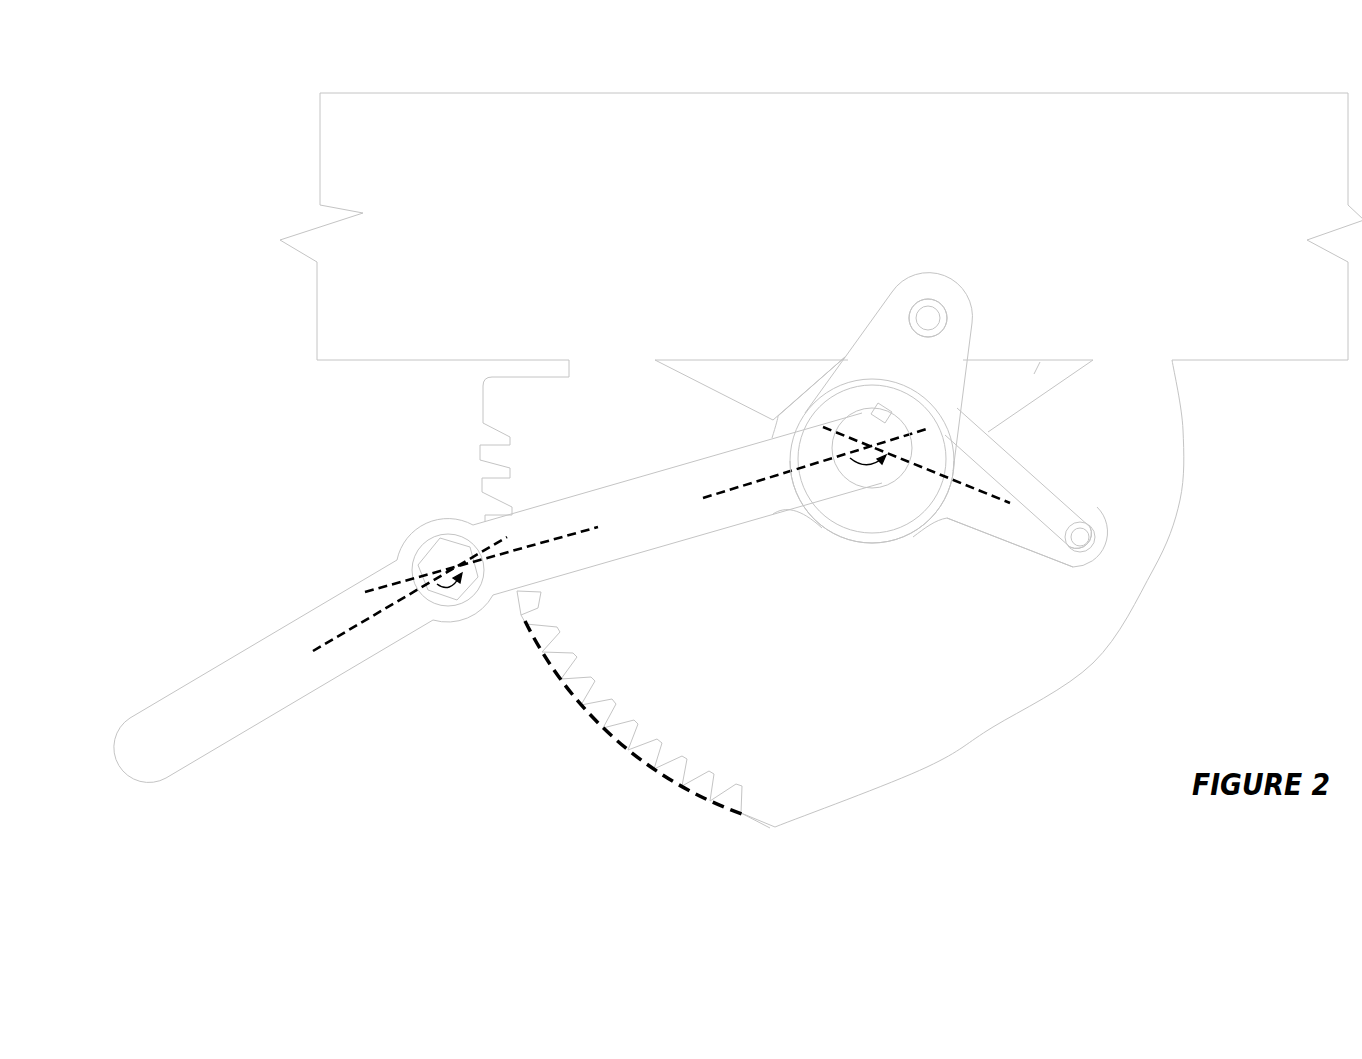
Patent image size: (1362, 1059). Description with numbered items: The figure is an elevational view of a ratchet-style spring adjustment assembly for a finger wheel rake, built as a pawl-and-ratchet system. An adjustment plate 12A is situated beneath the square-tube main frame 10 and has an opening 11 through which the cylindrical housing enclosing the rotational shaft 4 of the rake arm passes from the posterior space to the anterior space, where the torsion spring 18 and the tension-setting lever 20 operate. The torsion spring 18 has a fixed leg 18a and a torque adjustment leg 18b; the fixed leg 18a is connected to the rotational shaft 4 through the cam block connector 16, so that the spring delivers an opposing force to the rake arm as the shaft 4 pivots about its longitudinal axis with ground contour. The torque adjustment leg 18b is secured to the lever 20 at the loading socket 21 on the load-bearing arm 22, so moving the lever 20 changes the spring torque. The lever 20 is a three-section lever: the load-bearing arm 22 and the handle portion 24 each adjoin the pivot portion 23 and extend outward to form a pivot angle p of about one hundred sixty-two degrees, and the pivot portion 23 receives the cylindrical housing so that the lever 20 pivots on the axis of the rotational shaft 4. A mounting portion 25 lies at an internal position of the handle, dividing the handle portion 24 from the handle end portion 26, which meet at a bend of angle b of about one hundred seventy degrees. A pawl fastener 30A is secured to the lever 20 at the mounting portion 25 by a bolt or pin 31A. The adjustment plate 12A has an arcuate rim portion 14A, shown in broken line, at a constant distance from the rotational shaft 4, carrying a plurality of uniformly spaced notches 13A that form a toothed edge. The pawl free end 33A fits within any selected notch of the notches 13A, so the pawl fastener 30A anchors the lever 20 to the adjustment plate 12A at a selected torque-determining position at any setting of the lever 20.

The rotational shaft 4 is at (867, 427).
The main frame 10 is at (841, 195).
The opening 11 is at (1034, 374).
The adjustment plate 12A is at (782, 645).
The notches 13A is at (660, 742).
The arcuate rim portion 14A is at (695, 800).
The cam block connector 16 is at (919, 383).
The torsion spring 18 is at (1020, 473).
The fixed leg 18a is at (928, 300).
The torque adjustment leg 18b is at (1080, 525).
The tension-setting lever 20 is at (291, 596).
The loading socket 21 is at (1094, 535).
The load-bearing arm 22 is at (1028, 527).
The pivot portion 23 is at (872, 546).
The handle portion 24 is at (661, 528).
The mounting portion 25 is at (417, 522).
The handle end portion 26 is at (257, 698).
The pawl fastener 30A is at (430, 601).
The bolt or pin 31A is at (452, 550).
The pawl free end 33A is at (537, 596).
The pivot angle p is at (868, 469).
The bend angle b is at (449, 587).